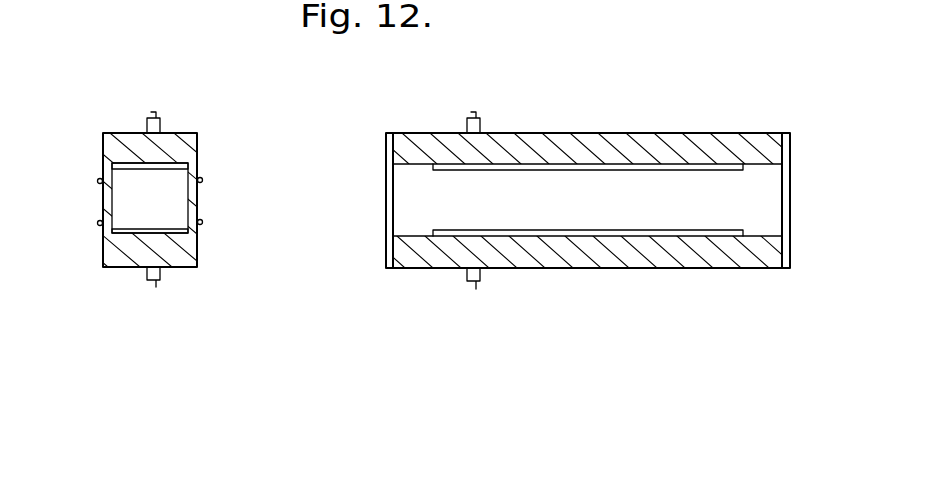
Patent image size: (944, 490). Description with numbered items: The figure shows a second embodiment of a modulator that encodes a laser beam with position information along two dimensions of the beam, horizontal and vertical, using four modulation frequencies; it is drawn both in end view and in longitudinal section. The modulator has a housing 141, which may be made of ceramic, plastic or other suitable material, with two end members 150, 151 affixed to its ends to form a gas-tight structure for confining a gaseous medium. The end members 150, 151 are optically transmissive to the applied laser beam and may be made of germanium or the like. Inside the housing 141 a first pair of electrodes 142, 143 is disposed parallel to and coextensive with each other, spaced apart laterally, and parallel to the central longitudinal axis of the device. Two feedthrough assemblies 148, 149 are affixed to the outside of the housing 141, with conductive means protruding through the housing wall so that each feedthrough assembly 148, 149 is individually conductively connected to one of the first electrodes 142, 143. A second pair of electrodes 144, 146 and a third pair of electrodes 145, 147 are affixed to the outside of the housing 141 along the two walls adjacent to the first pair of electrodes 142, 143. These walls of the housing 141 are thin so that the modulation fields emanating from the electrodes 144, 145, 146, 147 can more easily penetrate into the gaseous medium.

The housing 141 is at (123, 134).
The first electrode 142 is at (126, 220).
The first electrode 143 is at (173, 170).
The second pair electrode 144 is at (98, 223).
The third pair electrode 145 is at (98, 180).
The second pair electrode 146 is at (203, 223).
The third pair electrode 147 is at (203, 180).
The feedthrough assembly 148 is at (154, 284).
The feedthrough assembly 149 is at (158, 124).
The end member 150 is at (385, 193).
The end member 151 is at (792, 193).